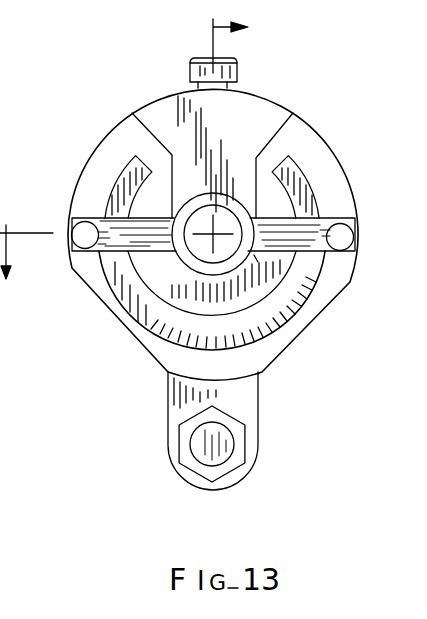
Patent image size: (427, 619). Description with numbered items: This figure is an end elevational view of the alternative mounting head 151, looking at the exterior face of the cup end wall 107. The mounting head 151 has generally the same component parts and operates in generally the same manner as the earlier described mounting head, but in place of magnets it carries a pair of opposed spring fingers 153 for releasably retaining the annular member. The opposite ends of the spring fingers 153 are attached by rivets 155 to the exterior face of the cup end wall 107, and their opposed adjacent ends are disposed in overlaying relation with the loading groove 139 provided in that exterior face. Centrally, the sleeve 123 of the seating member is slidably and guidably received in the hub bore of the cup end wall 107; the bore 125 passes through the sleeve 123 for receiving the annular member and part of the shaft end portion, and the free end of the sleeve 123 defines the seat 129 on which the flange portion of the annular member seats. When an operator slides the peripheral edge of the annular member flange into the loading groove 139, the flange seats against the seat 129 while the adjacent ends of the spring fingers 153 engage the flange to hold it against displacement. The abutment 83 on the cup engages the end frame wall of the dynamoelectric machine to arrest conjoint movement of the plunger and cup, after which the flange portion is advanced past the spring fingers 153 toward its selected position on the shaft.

The mounting head 151 is at (87, 127).
The cup end wall 107 is at (308, 143).
The loading groove 139 is at (255, 165).
The spring fingers 153 is at (92, 217).
The rivets 155 is at (84, 249).
The sleeve 123 is at (235, 197).
The bore 125 is at (196, 244).
The seat 129 is at (237, 264).
The abutment 83 is at (250, 330).